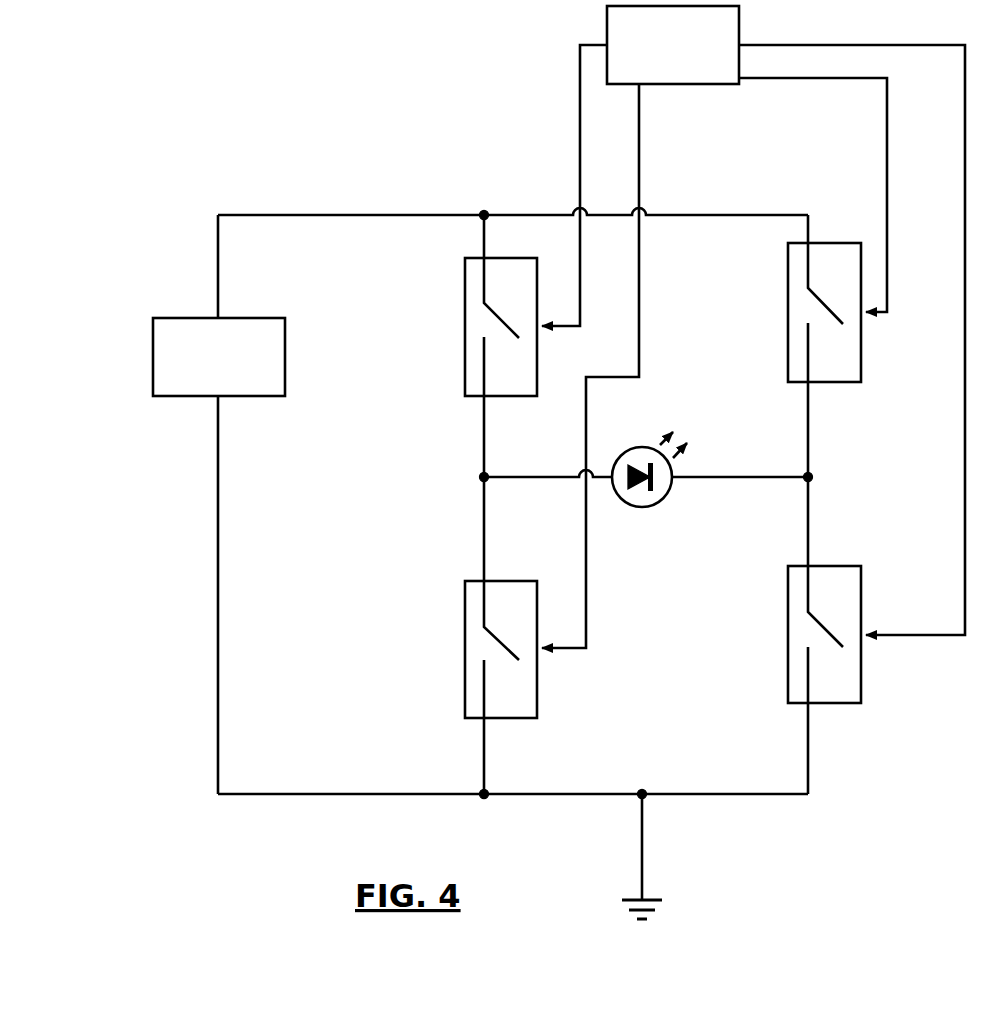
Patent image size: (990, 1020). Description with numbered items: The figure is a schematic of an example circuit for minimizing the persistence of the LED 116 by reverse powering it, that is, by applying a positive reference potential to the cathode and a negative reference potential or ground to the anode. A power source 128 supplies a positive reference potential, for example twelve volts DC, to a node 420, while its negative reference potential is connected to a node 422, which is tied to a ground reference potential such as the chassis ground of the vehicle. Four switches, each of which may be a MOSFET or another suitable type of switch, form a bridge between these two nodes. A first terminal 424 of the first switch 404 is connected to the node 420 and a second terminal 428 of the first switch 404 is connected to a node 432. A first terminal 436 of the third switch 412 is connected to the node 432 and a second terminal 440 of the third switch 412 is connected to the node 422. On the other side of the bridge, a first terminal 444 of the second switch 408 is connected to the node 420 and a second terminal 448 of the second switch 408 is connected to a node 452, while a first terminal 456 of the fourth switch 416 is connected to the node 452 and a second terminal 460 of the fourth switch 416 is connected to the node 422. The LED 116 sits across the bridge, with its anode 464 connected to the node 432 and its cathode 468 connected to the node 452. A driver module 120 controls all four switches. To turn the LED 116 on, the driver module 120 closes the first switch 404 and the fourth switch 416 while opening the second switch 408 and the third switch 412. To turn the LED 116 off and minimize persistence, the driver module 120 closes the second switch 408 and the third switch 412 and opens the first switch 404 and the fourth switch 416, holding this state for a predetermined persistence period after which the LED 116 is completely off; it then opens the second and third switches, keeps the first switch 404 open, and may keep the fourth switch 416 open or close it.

The LED 116 is at (671, 500).
The driver module 120 is at (708, 84).
The power source 128 is at (178, 397).
The first switch 404 is at (465, 330).
The second switch 408 is at (788, 333).
The third switch 412 is at (465, 672).
The fourth switch 416 is at (788, 678).
The node 420 is at (484, 213).
The node 422 is at (484, 797).
The first terminal 424 is at (484, 257).
The second terminal 428 is at (484, 398).
The node 432 is at (484, 480).
The first terminal 436 is at (484, 580).
The second terminal 440 is at (484, 721).
The first terminal 444 is at (808, 242).
The second terminal 448 is at (808, 397).
The node 452 is at (808, 478).
The first terminal 456 is at (808, 565).
The second terminal 460 is at (808, 705).
The anode 464 is at (612, 477).
The cathode 468 is at (673, 478).